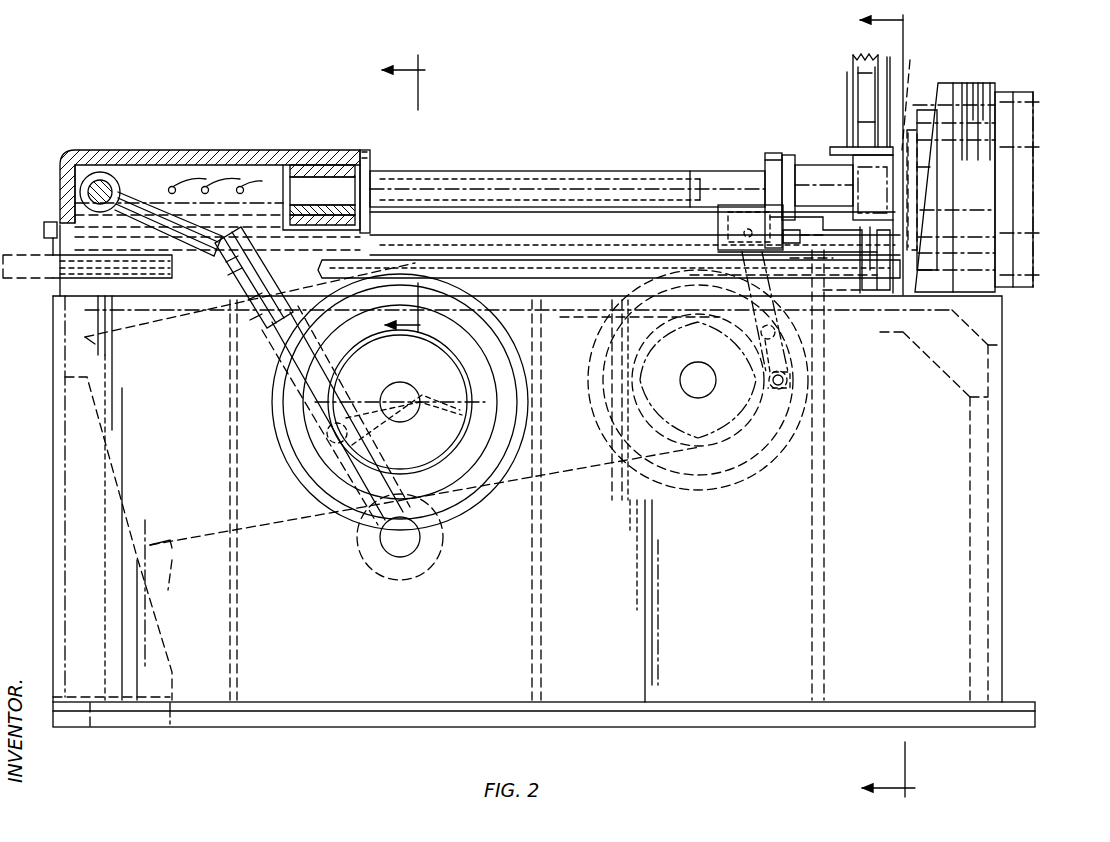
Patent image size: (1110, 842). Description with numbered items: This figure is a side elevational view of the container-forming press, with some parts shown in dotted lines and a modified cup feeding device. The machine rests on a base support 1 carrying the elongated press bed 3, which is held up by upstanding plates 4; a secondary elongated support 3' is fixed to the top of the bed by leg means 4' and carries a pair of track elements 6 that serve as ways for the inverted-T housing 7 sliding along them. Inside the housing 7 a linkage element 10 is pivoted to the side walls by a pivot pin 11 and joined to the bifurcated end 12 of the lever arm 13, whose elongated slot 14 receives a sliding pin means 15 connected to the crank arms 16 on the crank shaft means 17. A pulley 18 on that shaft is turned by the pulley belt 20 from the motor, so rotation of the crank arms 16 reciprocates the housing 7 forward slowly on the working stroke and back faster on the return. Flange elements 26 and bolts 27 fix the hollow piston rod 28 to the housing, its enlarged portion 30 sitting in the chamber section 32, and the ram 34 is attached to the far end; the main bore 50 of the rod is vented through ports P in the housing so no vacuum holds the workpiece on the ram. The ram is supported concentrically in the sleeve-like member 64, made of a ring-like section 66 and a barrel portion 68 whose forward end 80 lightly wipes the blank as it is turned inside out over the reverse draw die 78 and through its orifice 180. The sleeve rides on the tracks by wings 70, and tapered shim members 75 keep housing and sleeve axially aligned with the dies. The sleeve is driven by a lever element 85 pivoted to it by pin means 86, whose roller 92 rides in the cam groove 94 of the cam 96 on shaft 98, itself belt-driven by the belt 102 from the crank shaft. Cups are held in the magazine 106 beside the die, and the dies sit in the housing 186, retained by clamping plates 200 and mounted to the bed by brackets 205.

The base support 1 is at (340, 729).
The press bed 3 is at (501, 476).
The secondary elongated support 3' is at (86, 251).
The upstanding plates 4 is at (525, 526).
The leg means 4' is at (589, 265).
The track elements 6 is at (50, 222).
The housing 7 is at (222, 150).
The linkage element 10 is at (142, 190).
The pivot pin 11 is at (100, 170).
The bifurcated end 12 is at (212, 290).
The lever arm 13 is at (245, 325).
The elongated slot 14 is at (320, 407).
The pin means 15 is at (305, 474).
The crank arms 16 is at (425, 428).
The crank shaft means 17 is at (404, 398).
The pulley 18 is at (480, 512).
The pulley belt 20 is at (172, 570).
The flange elements 26 is at (366, 176).
The bolts 27 is at (370, 150).
The piston rod 28 is at (496, 171).
The enlarged portion 30 is at (320, 190).
The chamber section 32 is at (285, 165).
The ram 34 is at (704, 160).
The main bore 50 is at (330, 185).
The sleeve-like member 64 is at (786, 152).
The ring-like section 66 is at (770, 155).
The barrel portion 68 is at (824, 185).
The wings 70 is at (722, 230).
The shim members 75 is at (370, 240).
The reverse draw die 78 is at (905, 196).
The forward end 80 is at (873, 224).
The lever element 85 is at (790, 335).
The pin means 86 is at (718, 244).
The roller 92 is at (785, 390).
The cam groove 94 is at (700, 462).
The cam 96 is at (698, 380).
The shaft 98 is at (698, 380).
The belt 102 is at (577, 460).
The magazine 106 is at (845, 88).
The orifice 180 is at (904, 406).
The housing 186 is at (958, 83).
The clamping plates 200 is at (913, 132).
The brackets 205 is at (947, 262).
The ports P is at (218, 182).